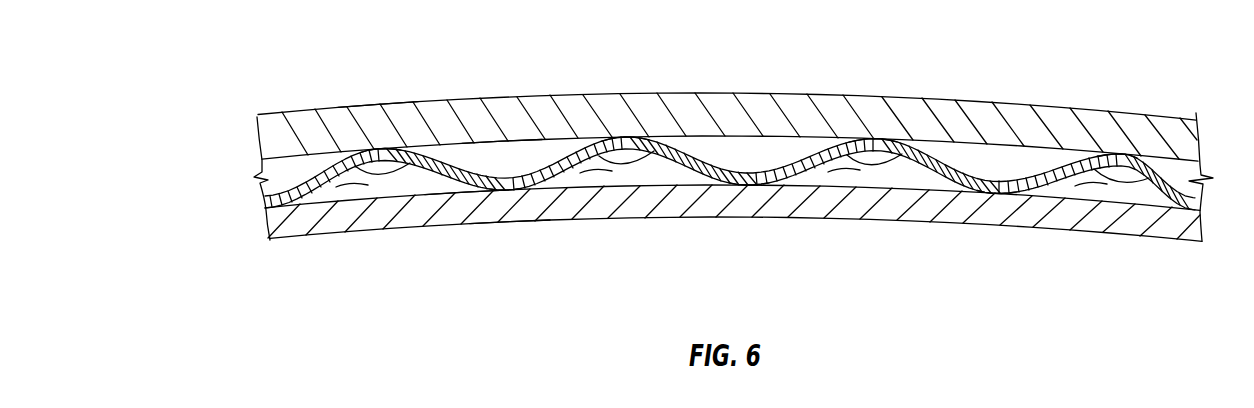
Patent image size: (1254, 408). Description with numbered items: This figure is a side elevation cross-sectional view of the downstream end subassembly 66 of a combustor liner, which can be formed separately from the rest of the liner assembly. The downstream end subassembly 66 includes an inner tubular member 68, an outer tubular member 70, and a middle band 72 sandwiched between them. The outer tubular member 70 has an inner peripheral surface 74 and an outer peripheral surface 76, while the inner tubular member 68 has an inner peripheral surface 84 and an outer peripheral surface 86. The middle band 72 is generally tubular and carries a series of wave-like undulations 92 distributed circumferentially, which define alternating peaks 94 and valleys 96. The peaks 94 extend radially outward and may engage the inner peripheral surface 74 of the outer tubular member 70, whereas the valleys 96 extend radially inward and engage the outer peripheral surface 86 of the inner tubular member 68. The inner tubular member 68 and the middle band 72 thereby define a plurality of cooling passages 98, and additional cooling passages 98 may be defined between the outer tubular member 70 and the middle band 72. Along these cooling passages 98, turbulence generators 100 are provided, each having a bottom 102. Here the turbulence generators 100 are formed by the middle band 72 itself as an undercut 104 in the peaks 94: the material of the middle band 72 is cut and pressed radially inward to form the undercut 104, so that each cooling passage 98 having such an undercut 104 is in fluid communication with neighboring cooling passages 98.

The downstream end subassembly 66 is at (233, 70).
The inner tubular member 68 is at (262, 226).
The outer tubular member 70 is at (260, 130).
The middle band 72 is at (266, 200).
The inner peripheral surface 74 is at (503, 156).
The outer peripheral surface 76 is at (365, 103).
The inner peripheral surface 84 is at (512, 222).
The outer peripheral surface 86 is at (460, 190).
The undulations 92 is at (712, 140).
The peaks 94 is at (630, 142).
The valleys 96 is at (742, 196).
The cooling passages 98 is at (392, 140).
The turbulence generators 100 is at (328, 200).
The bottom 102 is at (370, 178).
The undercut 104 is at (371, 192).